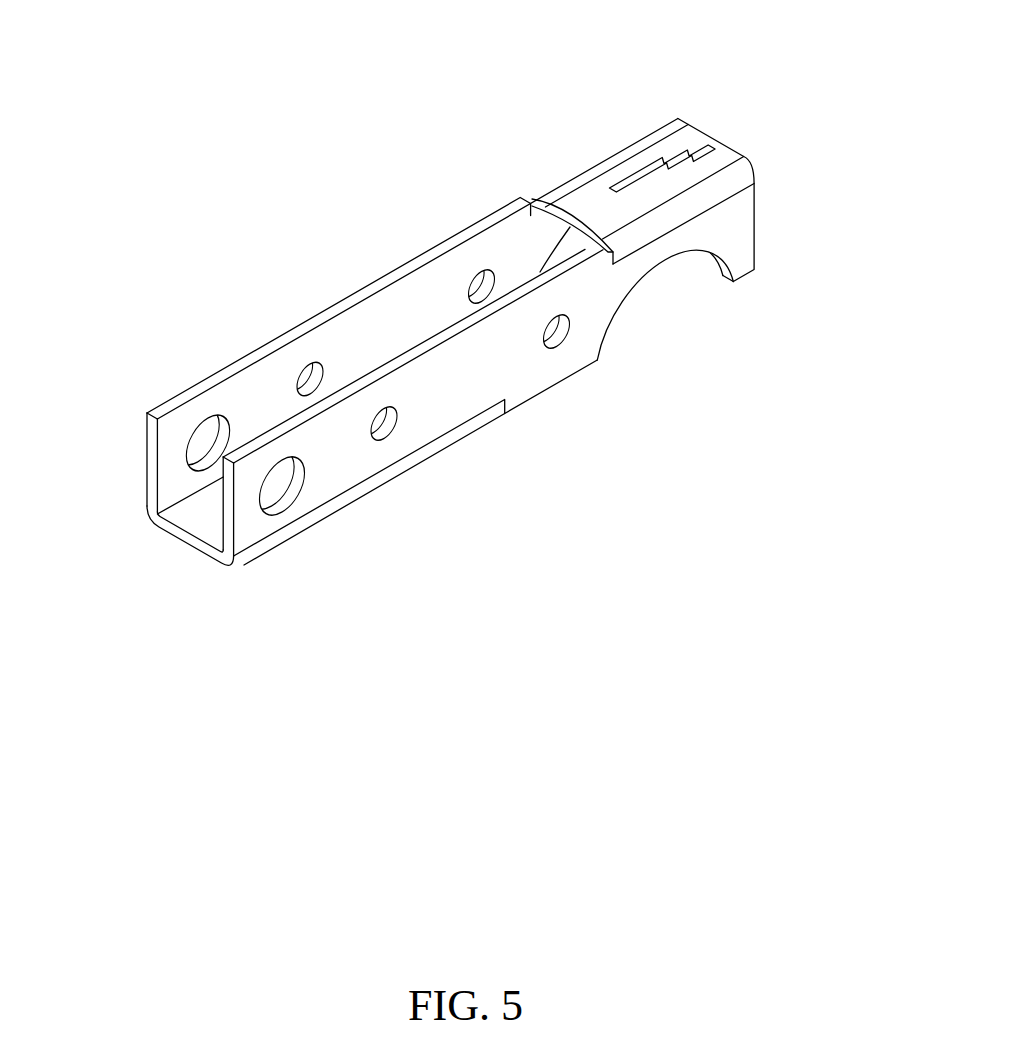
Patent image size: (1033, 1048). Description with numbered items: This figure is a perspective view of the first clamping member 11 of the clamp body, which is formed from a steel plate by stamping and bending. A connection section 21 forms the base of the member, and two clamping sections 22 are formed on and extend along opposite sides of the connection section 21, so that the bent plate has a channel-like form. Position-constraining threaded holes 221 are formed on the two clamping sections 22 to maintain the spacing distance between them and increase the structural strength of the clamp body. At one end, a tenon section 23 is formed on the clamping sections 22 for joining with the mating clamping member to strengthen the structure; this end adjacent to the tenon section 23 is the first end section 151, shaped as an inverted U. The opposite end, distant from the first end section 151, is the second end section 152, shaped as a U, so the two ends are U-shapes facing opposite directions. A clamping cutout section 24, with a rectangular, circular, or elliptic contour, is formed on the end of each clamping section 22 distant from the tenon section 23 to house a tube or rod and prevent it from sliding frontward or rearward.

The first clamping member 11 is at (428, 231).
The connection section 21 is at (207, 550).
The clamping sections 22 is at (273, 337).
The position-constraining threaded hole 221 is at (187, 443).
The tenon section 23 is at (640, 172).
The clamping cutout section 24 is at (630, 295).
The first end section 151 is at (758, 136).
The second end section 152 is at (192, 514).